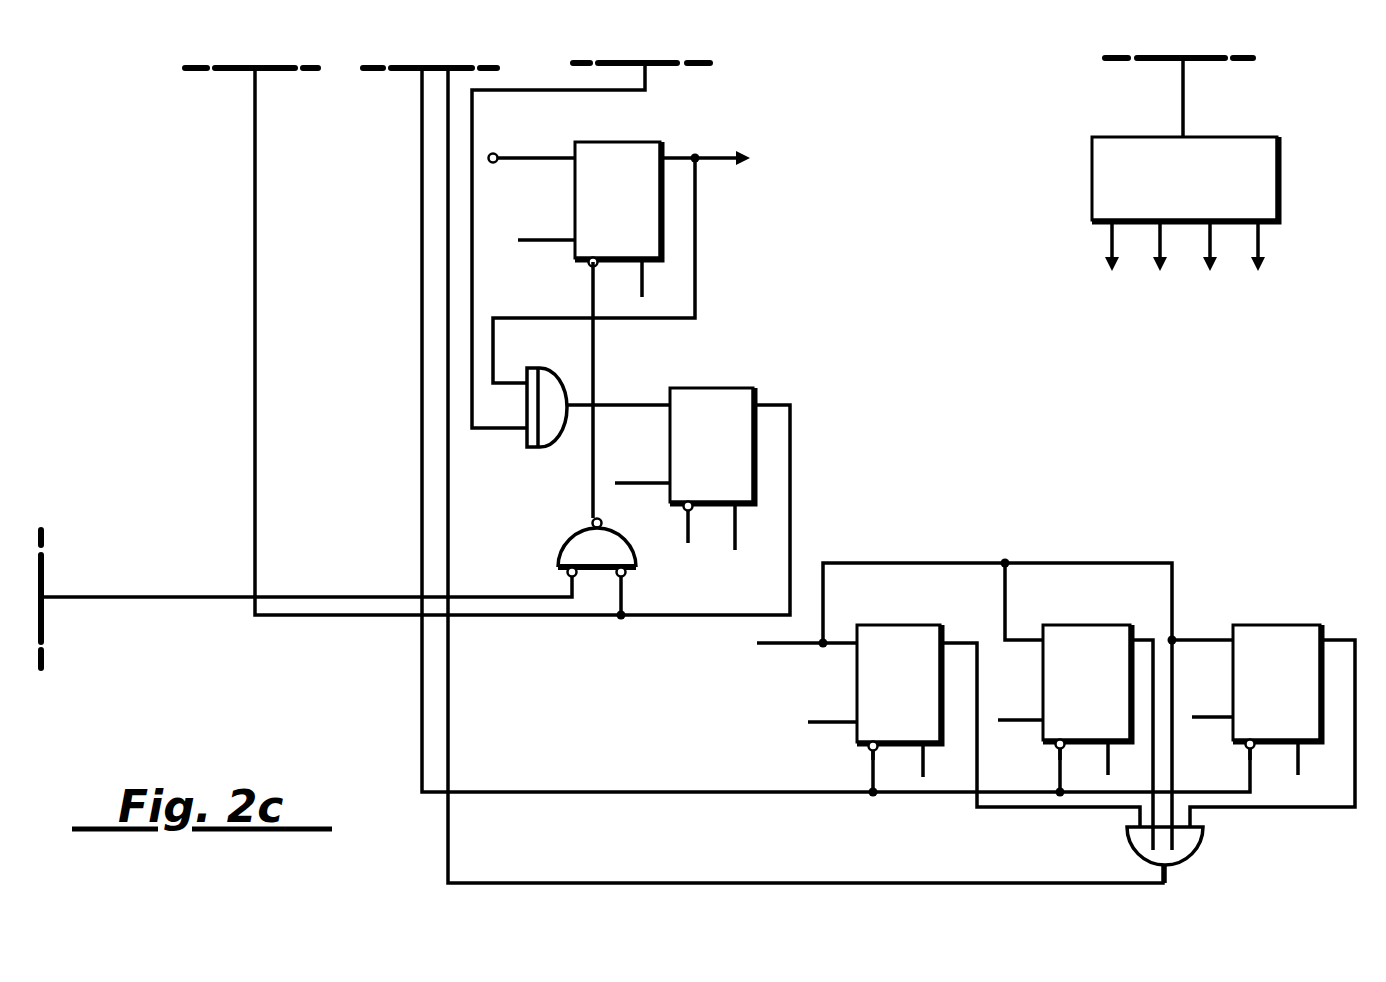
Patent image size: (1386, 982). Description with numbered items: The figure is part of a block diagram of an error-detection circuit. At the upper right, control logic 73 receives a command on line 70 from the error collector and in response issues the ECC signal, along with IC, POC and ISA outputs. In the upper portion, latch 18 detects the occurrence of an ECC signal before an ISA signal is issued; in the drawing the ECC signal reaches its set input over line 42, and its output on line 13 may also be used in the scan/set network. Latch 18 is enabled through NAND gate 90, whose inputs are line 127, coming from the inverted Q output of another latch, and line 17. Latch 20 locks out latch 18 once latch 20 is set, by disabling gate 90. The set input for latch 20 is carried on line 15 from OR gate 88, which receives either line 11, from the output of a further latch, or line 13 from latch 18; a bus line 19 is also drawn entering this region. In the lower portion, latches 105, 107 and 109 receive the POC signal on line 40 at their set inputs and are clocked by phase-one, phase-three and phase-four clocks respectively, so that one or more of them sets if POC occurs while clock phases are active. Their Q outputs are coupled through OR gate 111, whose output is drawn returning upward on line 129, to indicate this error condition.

The line 11 is at (645, 78).
The line 13 is at (697, 245).
The line 15 is at (622, 404).
The line 17 is at (253, 128).
The latch 18 is at (608, 142).
The bus line 19 is at (422, 128).
The latch 20 is at (695, 388).
The line 40 is at (798, 648).
The ECC input line 42 is at (540, 160).
The line 70 is at (1183, 97).
The control logic 73 is at (1258, 137).
The OR gate 88 is at (566, 383).
The NAND gate 90 is at (573, 533).
The latch 105 is at (885, 625).
The latch 107 is at (1065, 625).
The latch 109 is at (1260, 625).
The OR gate 111 is at (1185, 862).
The line 127 is at (80, 597).
The bus line 129 is at (450, 82).